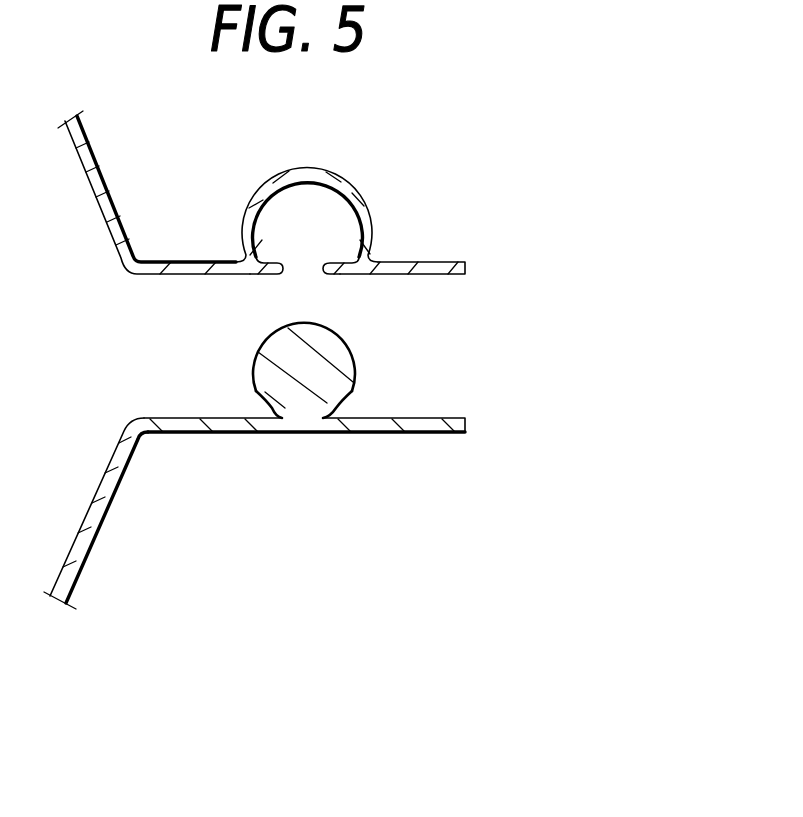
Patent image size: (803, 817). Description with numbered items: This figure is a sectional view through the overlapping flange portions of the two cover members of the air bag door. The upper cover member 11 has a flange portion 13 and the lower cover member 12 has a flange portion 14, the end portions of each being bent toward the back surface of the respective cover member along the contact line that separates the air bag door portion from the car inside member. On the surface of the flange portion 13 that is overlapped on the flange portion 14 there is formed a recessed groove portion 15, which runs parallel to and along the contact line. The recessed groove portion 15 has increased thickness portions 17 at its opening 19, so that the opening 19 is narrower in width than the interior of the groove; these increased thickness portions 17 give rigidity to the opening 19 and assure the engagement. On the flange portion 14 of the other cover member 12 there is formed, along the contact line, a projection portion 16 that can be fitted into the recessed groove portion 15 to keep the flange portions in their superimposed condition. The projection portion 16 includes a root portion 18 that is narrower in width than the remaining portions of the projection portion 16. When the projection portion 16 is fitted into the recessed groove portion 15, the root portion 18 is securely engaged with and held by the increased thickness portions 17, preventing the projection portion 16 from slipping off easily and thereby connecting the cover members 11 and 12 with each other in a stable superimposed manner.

The cover member 11 is at (105, 181).
The cover member 12 is at (125, 468).
The flange portion 13 is at (411, 262).
The flange portion 14 is at (383, 418).
The recessed groove portion 15 is at (273, 182).
The projection portion 16 is at (278, 352).
The increased thickness portions 17 is at (252, 258).
The root portion 18 is at (298, 412).
The opening 19 is at (299, 272).